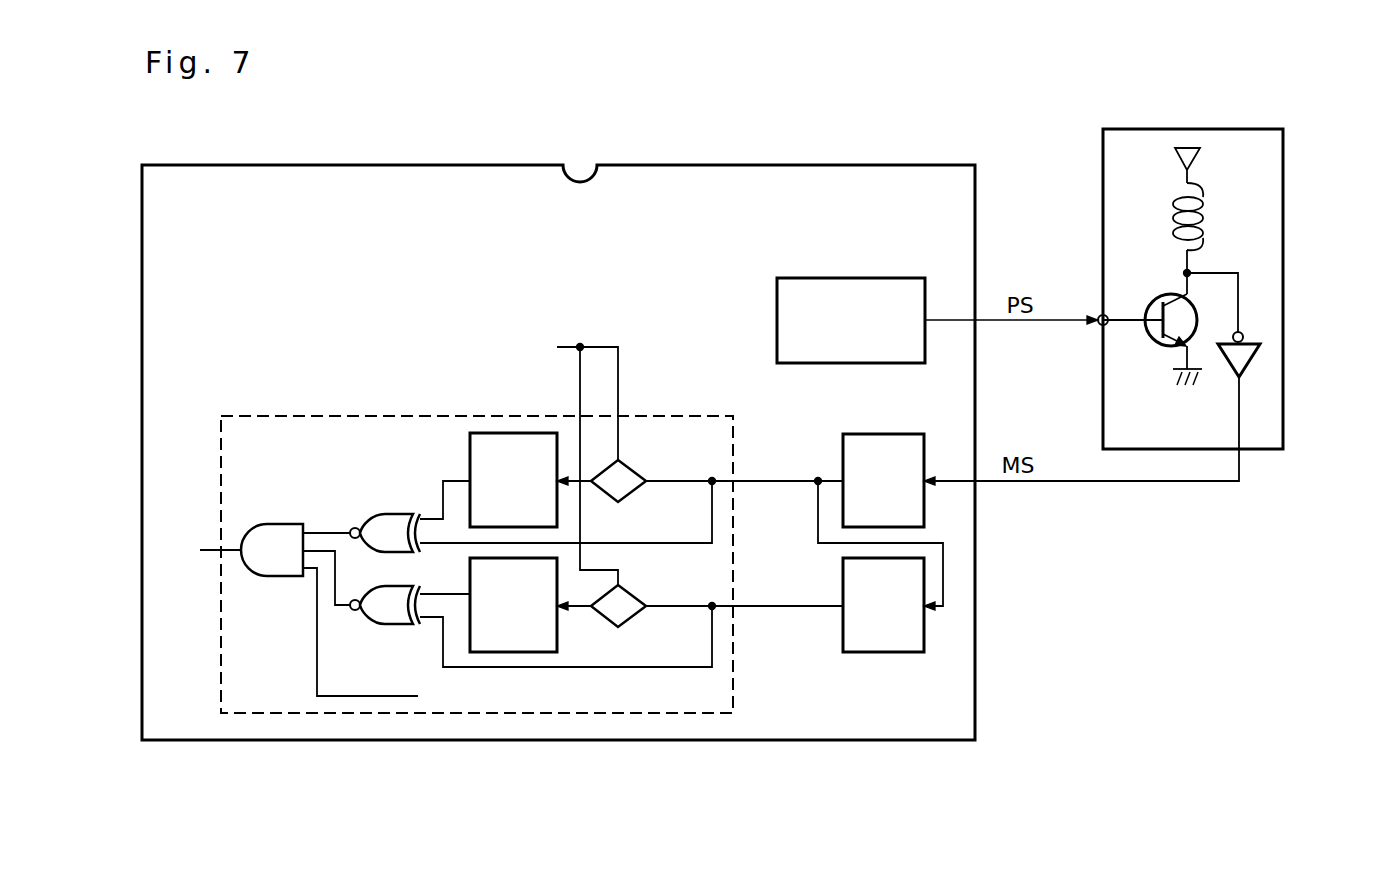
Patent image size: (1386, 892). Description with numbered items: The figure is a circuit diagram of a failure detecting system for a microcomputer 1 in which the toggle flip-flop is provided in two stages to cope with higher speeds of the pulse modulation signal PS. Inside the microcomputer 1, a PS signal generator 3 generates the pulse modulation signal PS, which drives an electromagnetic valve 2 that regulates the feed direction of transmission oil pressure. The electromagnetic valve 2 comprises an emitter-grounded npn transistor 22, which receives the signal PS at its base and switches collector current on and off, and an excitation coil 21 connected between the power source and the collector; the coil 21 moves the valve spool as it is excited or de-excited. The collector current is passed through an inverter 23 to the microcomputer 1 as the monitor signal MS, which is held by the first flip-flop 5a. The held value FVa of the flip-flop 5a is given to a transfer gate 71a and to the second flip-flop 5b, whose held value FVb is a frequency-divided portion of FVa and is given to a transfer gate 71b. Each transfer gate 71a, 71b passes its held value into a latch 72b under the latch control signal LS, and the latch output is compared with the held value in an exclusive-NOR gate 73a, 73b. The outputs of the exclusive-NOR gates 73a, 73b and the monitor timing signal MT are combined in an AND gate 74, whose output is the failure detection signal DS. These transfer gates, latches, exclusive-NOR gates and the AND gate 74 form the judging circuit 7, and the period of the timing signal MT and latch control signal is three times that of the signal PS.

The microcomputer 1 is at (803, 165).
The electromagnetic valve 2 is at (1187, 145).
The PS signal generator 3 is at (863, 278).
The toggle flip-flop circuit 5a is at (880, 434).
The toggle flip-flop circuit 5b is at (924, 637).
The judging circuit 7 is at (677, 416).
The excitation coil 21 is at (1205, 220).
The npn transistor 22 is at (1150, 302).
The inverter 23 is at (1243, 353).
The transfer gate 71a is at (637, 470).
The transfer gate 71b is at (637, 600).
The latch 72b is at (505, 433).
The exclusive-NOR gate 73a is at (405, 514).
The exclusive-NOR gate 73b is at (403, 623).
The AND gate 74 is at (280, 524).